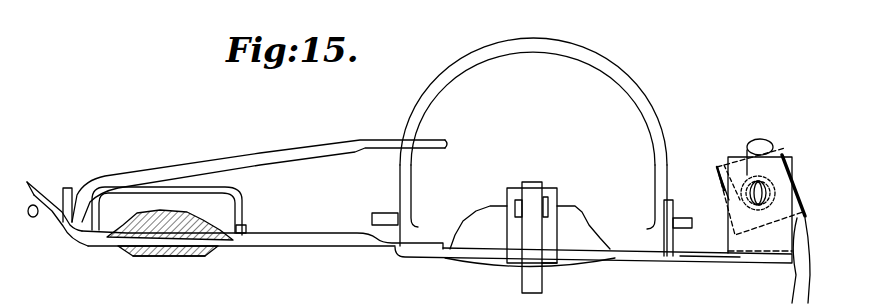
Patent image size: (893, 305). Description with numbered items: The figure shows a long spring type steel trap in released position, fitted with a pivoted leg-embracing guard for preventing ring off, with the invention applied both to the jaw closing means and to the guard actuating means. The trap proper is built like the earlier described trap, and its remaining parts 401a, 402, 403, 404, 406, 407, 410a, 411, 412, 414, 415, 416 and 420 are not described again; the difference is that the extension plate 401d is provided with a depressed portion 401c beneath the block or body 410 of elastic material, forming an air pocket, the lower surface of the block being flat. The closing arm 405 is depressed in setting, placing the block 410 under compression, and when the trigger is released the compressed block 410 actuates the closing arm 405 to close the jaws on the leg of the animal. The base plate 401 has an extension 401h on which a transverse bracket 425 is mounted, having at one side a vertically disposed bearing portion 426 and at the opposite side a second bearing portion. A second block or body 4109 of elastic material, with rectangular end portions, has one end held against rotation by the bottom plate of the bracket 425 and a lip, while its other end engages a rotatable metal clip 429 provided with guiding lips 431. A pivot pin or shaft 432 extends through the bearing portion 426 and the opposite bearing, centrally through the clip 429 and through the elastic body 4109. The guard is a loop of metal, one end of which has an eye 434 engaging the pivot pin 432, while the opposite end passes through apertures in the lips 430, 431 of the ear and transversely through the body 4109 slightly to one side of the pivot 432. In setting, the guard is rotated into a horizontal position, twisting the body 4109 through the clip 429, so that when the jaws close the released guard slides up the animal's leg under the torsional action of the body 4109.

The base plate 401 is at (619, 258).
The upturned lug of plate 401a is at (88, 165).
The depressed portion 401c is at (158, 252).
The extension plate 401d is at (279, 246).
The extension 401h is at (692, 259).
The legs of bail 402 is at (397, 194).
The brackets 403 is at (373, 213).
The bail 404 is at (577, 52).
The closing arm 405 is at (272, 156).
The hook end 406 is at (31, 181).
The loop member 407 is at (88, 198).
The block or body of elastic material 410 is at (222, 207).
The lower pad portion 410a is at (133, 242).
The block or body of elastic material 4109 is at (716, 170).
The foot 411 is at (248, 227).
The spring clip 412 is at (475, 241).
The clip base 414 is at (549, 262).
The housing 415 is at (555, 204).
The post 416 is at (530, 185).
The pin 420 is at (33, 217).
The transverse bracket 425 is at (729, 252).
The vertically disposed bearing portion 426 is at (745, 152).
The rotatable metal clip 429 is at (716, 167).
The lip 430 is at (727, 167).
The guiding lips 431 is at (792, 268).
The pivot pin or shaft 432 is at (763, 182).
The eye 434 is at (769, 139).